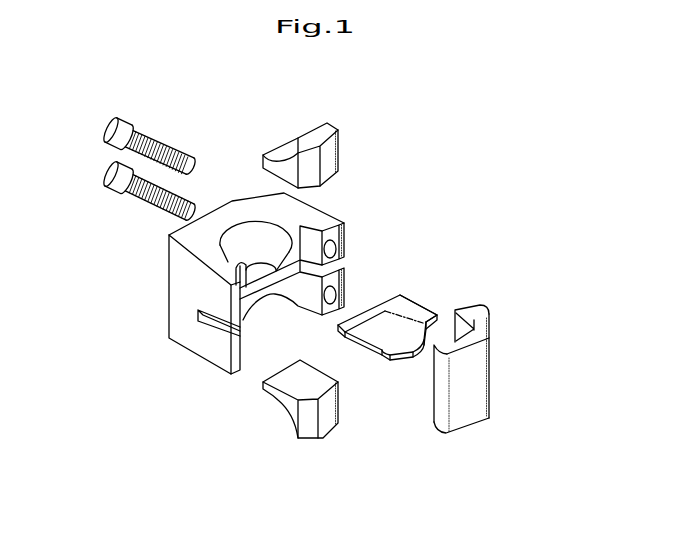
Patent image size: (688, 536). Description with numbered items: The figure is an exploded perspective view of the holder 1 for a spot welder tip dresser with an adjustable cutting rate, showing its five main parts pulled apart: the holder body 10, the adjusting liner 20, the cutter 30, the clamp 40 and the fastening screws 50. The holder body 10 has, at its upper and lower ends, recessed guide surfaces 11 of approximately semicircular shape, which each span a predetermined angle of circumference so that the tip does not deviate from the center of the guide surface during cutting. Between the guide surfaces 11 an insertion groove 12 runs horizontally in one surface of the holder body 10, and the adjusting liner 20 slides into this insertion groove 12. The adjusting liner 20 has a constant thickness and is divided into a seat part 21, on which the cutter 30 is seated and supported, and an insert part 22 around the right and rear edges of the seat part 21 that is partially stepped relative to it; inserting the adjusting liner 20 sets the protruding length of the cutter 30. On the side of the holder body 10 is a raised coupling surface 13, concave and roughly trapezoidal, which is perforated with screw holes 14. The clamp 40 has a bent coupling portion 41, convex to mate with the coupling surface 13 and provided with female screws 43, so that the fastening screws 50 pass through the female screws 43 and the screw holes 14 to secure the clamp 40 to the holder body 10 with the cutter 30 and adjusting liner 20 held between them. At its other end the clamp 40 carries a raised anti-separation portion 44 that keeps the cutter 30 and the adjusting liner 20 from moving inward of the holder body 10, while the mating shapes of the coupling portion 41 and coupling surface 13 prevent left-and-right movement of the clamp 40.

The holder 1 is at (140, 369).
The holder body 10 is at (173, 281).
The guide surfaces 11 is at (241, 241).
The insertion groove 12 is at (289, 275).
The coupling surface 13 is at (331, 233).
The screw holes 14 is at (332, 294).
The adjusting liner 20 is at (394, 363).
The seat part 21 is at (378, 333).
The insert part 22 is at (413, 301).
The cutter 30 is at (332, 155).
The clamp 40 is at (473, 424).
The coupling portion 41 is at (469, 304).
The female screws 43 is at (490, 391).
The anti-separation portion 44 is at (434, 405).
The fastening screws 50 is at (105, 170).